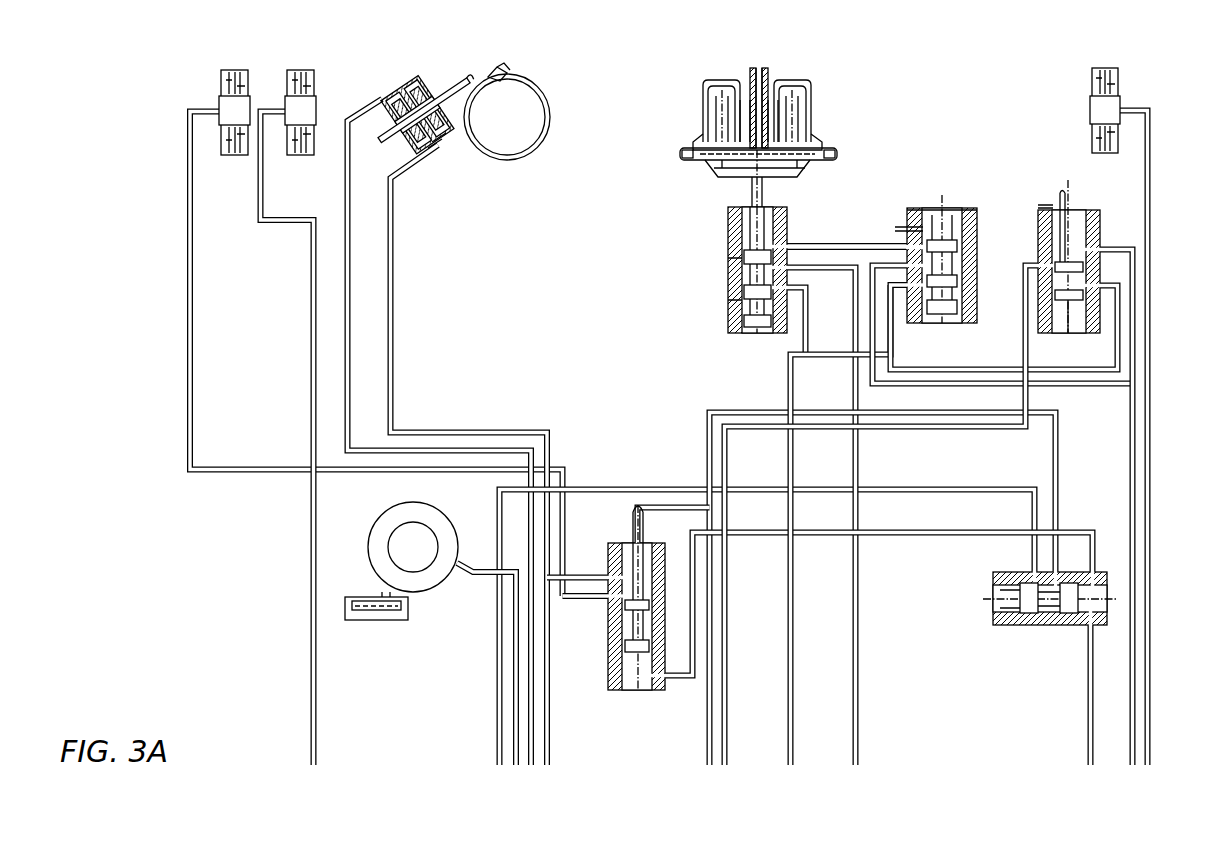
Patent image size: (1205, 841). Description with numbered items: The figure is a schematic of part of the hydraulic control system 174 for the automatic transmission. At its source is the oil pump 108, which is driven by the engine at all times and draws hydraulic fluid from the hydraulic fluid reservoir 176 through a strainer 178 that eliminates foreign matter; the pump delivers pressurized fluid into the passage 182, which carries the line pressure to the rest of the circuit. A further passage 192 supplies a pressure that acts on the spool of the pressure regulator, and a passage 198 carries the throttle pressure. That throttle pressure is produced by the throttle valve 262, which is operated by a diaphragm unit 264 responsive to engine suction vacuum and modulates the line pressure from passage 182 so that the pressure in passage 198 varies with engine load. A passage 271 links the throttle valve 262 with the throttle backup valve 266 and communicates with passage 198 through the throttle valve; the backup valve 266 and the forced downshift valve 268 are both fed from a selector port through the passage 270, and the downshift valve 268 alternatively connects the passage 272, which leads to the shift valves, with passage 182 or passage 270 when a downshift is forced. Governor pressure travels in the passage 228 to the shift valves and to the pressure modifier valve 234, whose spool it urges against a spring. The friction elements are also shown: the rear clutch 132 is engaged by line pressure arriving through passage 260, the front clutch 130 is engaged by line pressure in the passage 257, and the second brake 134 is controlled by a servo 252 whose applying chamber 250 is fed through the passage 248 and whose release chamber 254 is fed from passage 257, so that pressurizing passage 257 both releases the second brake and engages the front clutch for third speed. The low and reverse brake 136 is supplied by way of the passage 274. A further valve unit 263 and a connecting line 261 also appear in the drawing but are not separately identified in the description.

The oil pump 108 is at (375, 518).
The front clutch 130 is at (210, 78).
The rear clutch 132 is at (282, 78).
The second brake 134 is at (530, 80).
The low and reverse brake 136 is at (1082, 76).
The hydraulic control system 174 is at (692, 52).
The hydraulic fluid reservoir 176 is at (372, 622).
The strainer 178 is at (358, 598).
The passage 182 is at (1120, 305).
The passage 192 is at (617, 489).
The passage 198 is at (728, 412).
The passage 228 is at (1090, 757).
The pressure modifier valve 234 is at (990, 578).
The passage 248 is at (347, 195).
The applying chamber 250 is at (397, 98).
The servo 252 is at (432, 72).
The release chamber 254 is at (437, 138).
The passage 257 is at (190, 266).
The passage 260 is at (313, 266).
The conduit 261 is at (566, 600).
The throttle valve 262 is at (722, 237).
The valve 263 is at (607, 665).
The diaphragm unit 264 is at (822, 118).
The throttle backup valve 266 is at (918, 208).
The forced downshift valve 268 is at (1037, 208).
The passage 270 is at (1135, 258).
The passage 271 is at (834, 244).
The passage 272 is at (1025, 345).
The passage 274 is at (1150, 230).